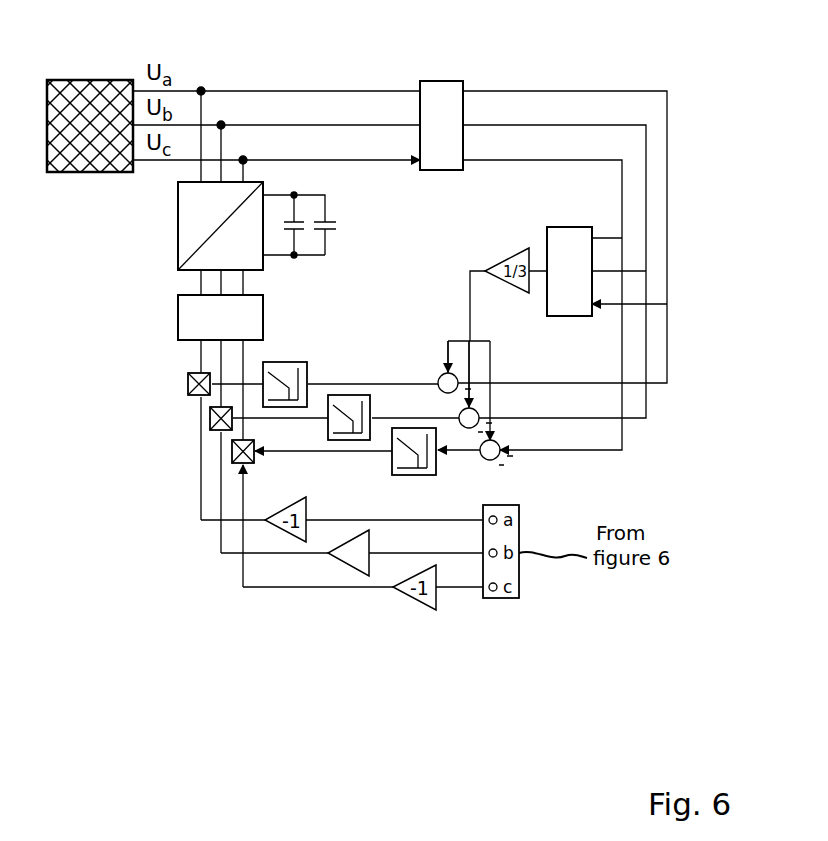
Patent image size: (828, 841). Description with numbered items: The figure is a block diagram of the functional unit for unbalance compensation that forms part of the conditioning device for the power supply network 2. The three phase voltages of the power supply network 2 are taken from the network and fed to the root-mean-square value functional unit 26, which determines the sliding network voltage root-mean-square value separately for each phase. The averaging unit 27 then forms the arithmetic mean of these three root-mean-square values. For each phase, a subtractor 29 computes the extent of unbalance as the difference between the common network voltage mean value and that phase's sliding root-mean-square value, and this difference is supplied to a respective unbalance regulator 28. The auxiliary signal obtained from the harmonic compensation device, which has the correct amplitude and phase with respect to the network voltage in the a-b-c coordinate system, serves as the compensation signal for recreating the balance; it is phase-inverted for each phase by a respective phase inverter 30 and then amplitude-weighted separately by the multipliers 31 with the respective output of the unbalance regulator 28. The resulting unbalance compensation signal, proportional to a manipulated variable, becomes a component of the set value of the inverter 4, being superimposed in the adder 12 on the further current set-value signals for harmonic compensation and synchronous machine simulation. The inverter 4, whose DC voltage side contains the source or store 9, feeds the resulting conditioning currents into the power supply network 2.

The power supply network 2 is at (80, 80).
The inverter 4 is at (178, 222).
The source or store 9 is at (325, 250).
The adder 12 is at (178, 316).
The root-mean-square value functional unit 26 is at (443, 81).
The averaging unit 27 is at (570, 227).
The unbalance regulator 28 is at (355, 395).
The subtractor 29 is at (496, 459).
The inverting gain block 30 is at (345, 565).
The phase inverter / multiplier 31 is at (210, 424).